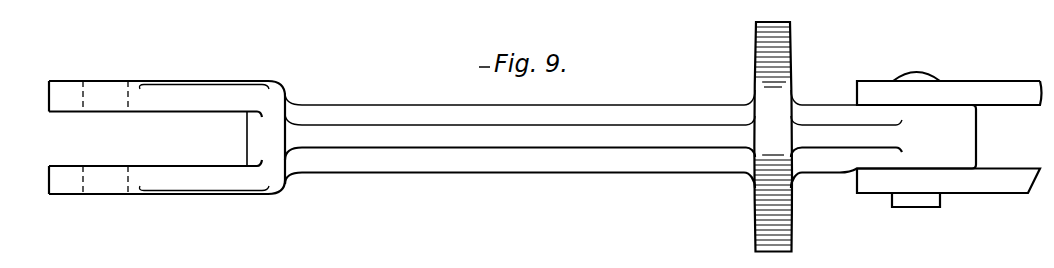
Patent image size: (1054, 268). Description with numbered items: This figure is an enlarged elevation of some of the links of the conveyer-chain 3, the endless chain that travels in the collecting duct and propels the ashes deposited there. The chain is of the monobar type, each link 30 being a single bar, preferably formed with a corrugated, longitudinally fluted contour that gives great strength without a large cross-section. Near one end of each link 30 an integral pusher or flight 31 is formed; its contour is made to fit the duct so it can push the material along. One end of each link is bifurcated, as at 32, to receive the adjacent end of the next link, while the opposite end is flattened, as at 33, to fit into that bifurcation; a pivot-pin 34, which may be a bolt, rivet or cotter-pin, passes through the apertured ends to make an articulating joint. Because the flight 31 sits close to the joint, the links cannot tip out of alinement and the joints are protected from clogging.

The conveyer-chain 3 is at (528, 86).
The link 30 is at (593, 146).
The flight 31 is at (793, 237).
The bifurcated end 32 is at (147, 125).
The flattened end 33 is at (916, 137).
The pivot-pin 34 is at (930, 65).